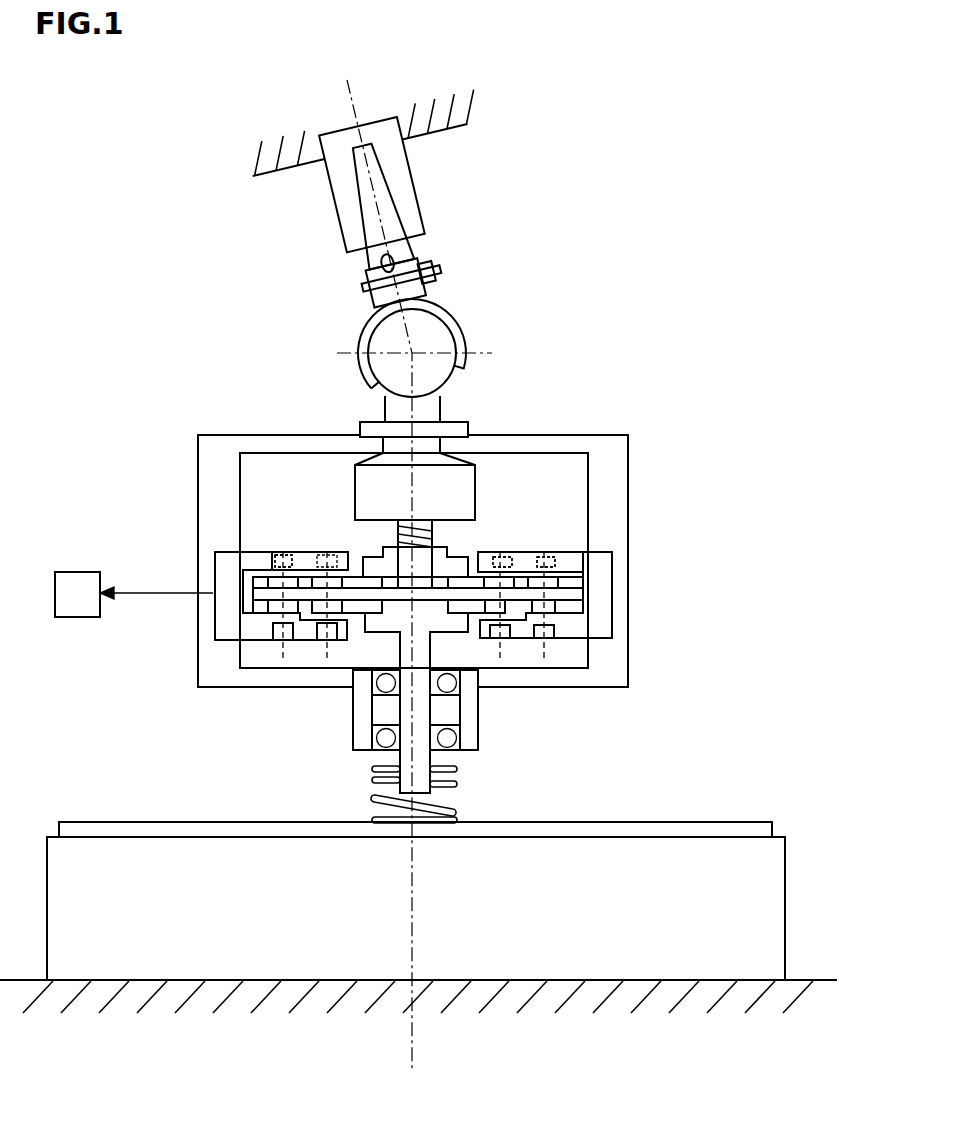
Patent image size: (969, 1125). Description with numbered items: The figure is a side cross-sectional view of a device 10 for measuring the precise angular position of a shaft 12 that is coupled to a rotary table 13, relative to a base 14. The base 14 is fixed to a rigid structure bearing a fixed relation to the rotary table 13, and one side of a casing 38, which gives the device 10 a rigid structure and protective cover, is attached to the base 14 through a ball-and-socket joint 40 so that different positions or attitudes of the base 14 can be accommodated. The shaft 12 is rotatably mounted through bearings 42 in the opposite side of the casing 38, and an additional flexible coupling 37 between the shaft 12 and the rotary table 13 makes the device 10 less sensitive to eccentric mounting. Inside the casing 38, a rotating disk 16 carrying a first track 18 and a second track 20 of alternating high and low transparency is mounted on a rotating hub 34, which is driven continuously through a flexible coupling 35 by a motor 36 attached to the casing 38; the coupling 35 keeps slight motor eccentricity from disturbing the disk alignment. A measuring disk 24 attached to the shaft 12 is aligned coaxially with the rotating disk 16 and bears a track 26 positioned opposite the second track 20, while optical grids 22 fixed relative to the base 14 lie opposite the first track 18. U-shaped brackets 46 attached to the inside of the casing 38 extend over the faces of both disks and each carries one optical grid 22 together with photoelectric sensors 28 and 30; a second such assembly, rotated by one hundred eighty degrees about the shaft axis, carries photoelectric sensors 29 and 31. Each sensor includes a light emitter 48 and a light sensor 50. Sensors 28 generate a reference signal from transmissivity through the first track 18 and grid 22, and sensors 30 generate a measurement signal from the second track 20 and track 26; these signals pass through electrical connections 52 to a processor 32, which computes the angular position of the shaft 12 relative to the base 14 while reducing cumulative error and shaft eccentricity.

The device 10 is at (738, 445).
The shaft 12 is at (422, 757).
The rotary table 13 is at (720, 872).
The base 14 is at (404, 188).
The rotating disk 16 is at (478, 552).
The first track 18 is at (558, 580).
The second track 20 is at (512, 572).
The optical grids 22 is at (562, 610).
The measuring disk 24 is at (473, 613).
The track 26 is at (512, 613).
The photoelectric sensors 28 is at (300, 550).
The photoelectric sensor 29 is at (505, 550).
The photoelectric sensors 30 is at (282, 550).
The photoelectric sensor 31 is at (548, 550).
The processor 32 is at (77, 594).
The rotating hub 34 is at (323, 550).
The flexible coupling 35 is at (373, 567).
The motor 36 is at (366, 477).
The flexible coupling 37 is at (372, 796).
The casing 38 is at (552, 442).
The ball-and-socket joint 40 is at (438, 343).
The bearings 42 is at (478, 697).
The U-shaped bracket 46 is at (225, 583).
The light emitter 48 is at (275, 567).
The light sensor 50 is at (270, 630).
The electrical connections 52 is at (133, 595).